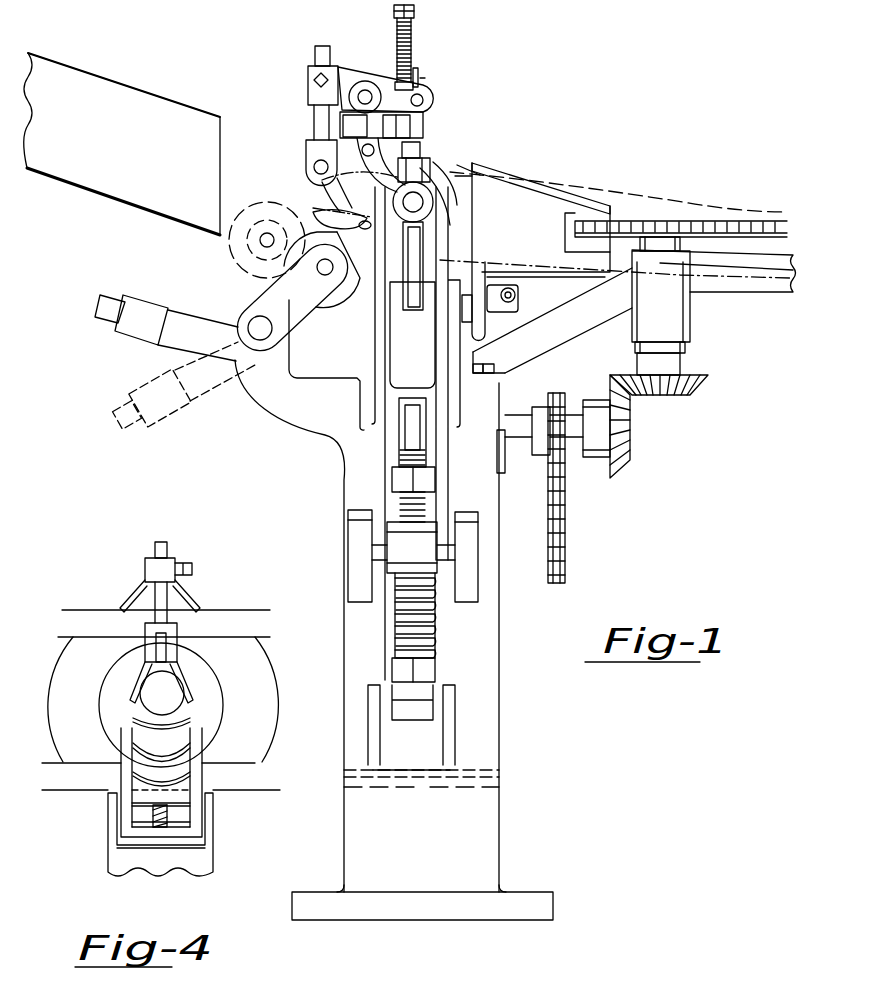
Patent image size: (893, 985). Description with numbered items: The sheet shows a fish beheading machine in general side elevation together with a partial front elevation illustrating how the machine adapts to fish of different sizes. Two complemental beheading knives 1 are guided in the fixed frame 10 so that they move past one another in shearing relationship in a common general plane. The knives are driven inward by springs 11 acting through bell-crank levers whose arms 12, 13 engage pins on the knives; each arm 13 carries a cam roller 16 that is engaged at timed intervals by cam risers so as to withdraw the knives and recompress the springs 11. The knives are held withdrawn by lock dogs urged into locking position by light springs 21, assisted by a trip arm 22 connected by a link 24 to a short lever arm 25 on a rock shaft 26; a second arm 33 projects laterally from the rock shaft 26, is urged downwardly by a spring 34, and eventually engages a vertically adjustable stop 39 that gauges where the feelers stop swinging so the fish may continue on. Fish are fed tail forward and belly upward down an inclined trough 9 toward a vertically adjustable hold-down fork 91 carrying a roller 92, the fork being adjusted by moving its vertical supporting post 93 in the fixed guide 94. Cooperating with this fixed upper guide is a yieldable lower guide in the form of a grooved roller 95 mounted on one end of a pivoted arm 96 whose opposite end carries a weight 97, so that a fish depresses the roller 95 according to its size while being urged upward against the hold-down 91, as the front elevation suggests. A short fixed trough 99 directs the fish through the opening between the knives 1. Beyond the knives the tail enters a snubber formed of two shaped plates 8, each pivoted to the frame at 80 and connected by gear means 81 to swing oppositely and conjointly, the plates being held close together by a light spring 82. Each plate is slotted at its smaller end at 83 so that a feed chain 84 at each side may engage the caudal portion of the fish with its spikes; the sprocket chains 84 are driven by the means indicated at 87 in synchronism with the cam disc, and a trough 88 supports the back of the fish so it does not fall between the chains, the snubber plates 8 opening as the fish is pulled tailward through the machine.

In FIG. 1, the beheading knives 1 is at (452, 168).
In FIG. 4, the beheading knives 1 is at (58, 722).
In FIG. 1, the snubber plates 8 is at (532, 183).
In FIG. 1, the inclined trough 9 is at (86, 70).
In FIG. 4, the fixed frame 10 is at (253, 610).
In FIG. 1, the springs 11 is at (397, 620).
In FIG. 1, the bell-crank lever arm 12 is at (400, 548).
In FIG. 1, the bell-crank lever arm 13 is at (375, 355).
In FIG. 1, the cam roller 16 is at (413, 437).
In FIG. 1, the light springs 21 is at (430, 162).
In FIG. 1, the trip arm 22 is at (420, 148).
In FIG. 1, the link 24 is at (421, 120).
In FIG. 1, the short lever arm 25 is at (406, 100).
In FIG. 1, the rock shaft 26 is at (364, 96).
In FIG. 1, the second arm 33 is at (418, 88).
In FIG. 1, the spring 34 is at (412, 32).
In FIG. 1, the vertically adjustable stop 39 is at (425, 78).
In FIG. 1, the pivot 80 is at (548, 322).
In FIG. 1, the gear means 81 is at (496, 340).
In FIG. 1, the light spring 82 is at (518, 297).
In FIG. 1, the slot 83 is at (585, 218).
In FIG. 1, the feed chain 84 is at (722, 220).
In FIG. 1, the driving means 87 is at (628, 400).
In FIG. 1, the trough 88 is at (727, 283).
In FIG. 1, the hold-down fork 91 is at (352, 198).
In FIG. 4, the hold-down fork 91 is at (184, 684).
In FIG. 1, the roller 92 is at (305, 162).
In FIG. 4, the roller 92 is at (172, 648).
In FIG. 1, the vertical supporting post 93 is at (310, 106).
In FIG. 4, the vertical supporting post 93 is at (166, 600).
In FIG. 1, the fixed guide 94 is at (310, 72).
In FIG. 4, the fixed guide 94 is at (170, 560).
In FIG. 1, the grooved roller 95 is at (335, 300).
In FIG. 4, the grooved roller 95 is at (193, 730).
In FIG. 1, the pivoted arm 96 is at (262, 300).
In FIG. 4, the pivoted arm 96 is at (207, 776).
In FIG. 1, the weight 97 is at (128, 328).
In FIG. 1, the short fixed trough 99 is at (510, 272).